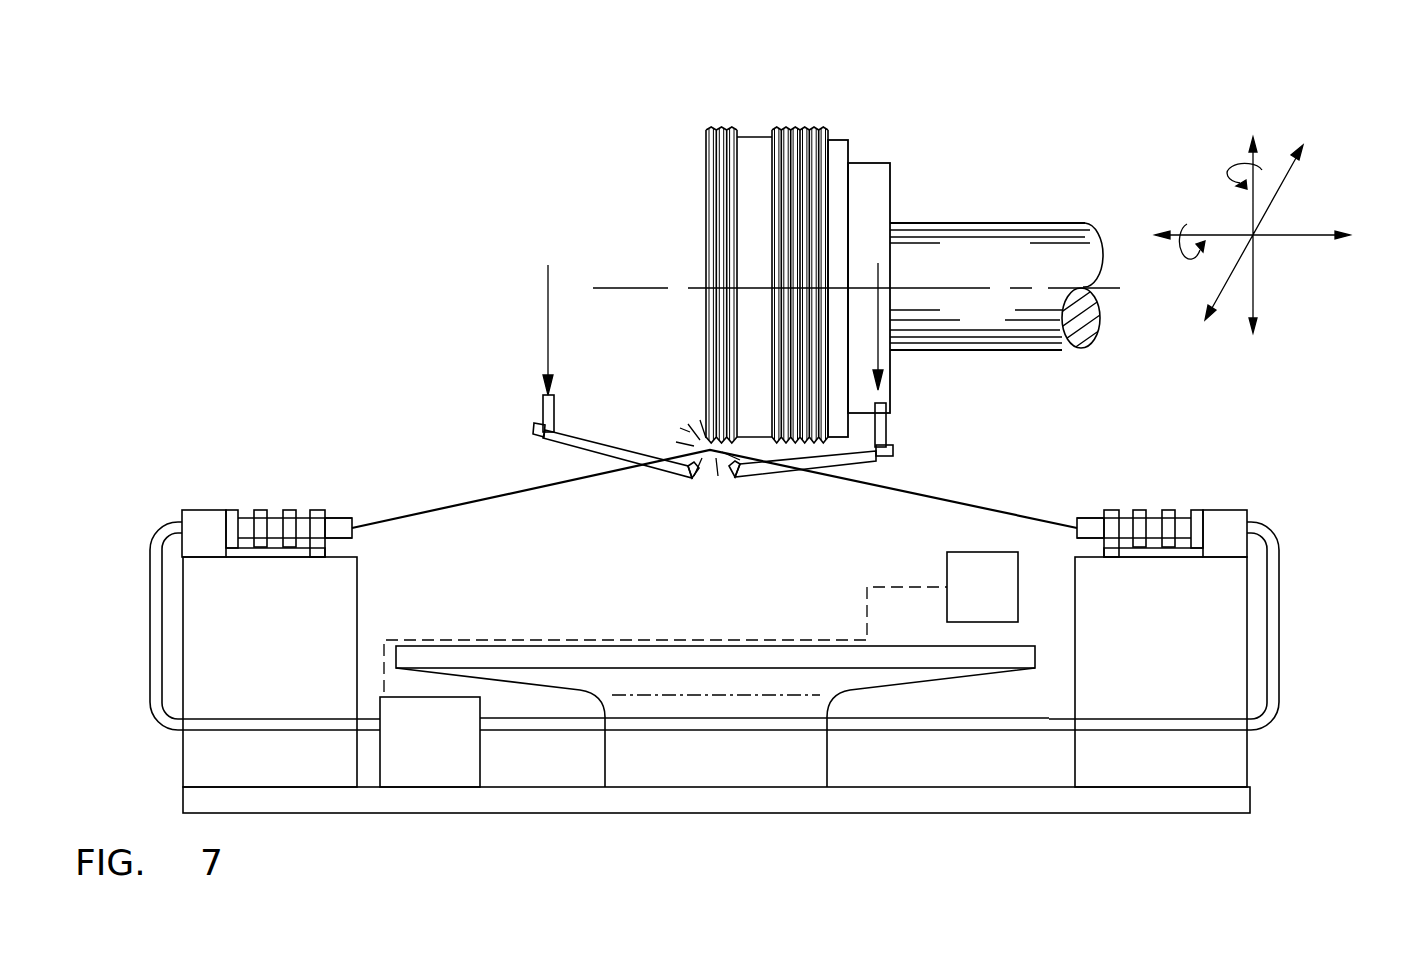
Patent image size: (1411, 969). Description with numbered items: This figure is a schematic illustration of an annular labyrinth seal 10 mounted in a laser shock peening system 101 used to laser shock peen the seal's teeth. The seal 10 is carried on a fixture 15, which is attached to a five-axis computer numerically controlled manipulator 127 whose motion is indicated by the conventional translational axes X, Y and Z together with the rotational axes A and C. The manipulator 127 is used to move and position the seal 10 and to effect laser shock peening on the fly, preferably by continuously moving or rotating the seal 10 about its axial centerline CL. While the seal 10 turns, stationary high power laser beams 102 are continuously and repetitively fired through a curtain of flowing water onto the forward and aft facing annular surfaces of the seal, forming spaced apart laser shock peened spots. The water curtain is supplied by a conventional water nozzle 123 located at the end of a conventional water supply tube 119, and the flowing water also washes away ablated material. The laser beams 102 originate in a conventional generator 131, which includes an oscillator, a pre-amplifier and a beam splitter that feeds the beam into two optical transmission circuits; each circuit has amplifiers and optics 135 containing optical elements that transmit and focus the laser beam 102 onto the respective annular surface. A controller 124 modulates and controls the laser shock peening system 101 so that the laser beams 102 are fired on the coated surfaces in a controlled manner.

The annular labyrinth seal 10 is at (876, 90).
The fixture 15 is at (863, 178).
The laser shock peening system 101 is at (1040, 442).
The laser beams 102 is at (412, 505).
The water supply tube 119 is at (600, 445).
The water nozzle 123 is at (695, 480).
The controller 124 is at (1006, 602).
The five-axis CNC manipulator 127 is at (1183, 182).
The generator 131 is at (458, 752).
The optics 135 is at (262, 510).